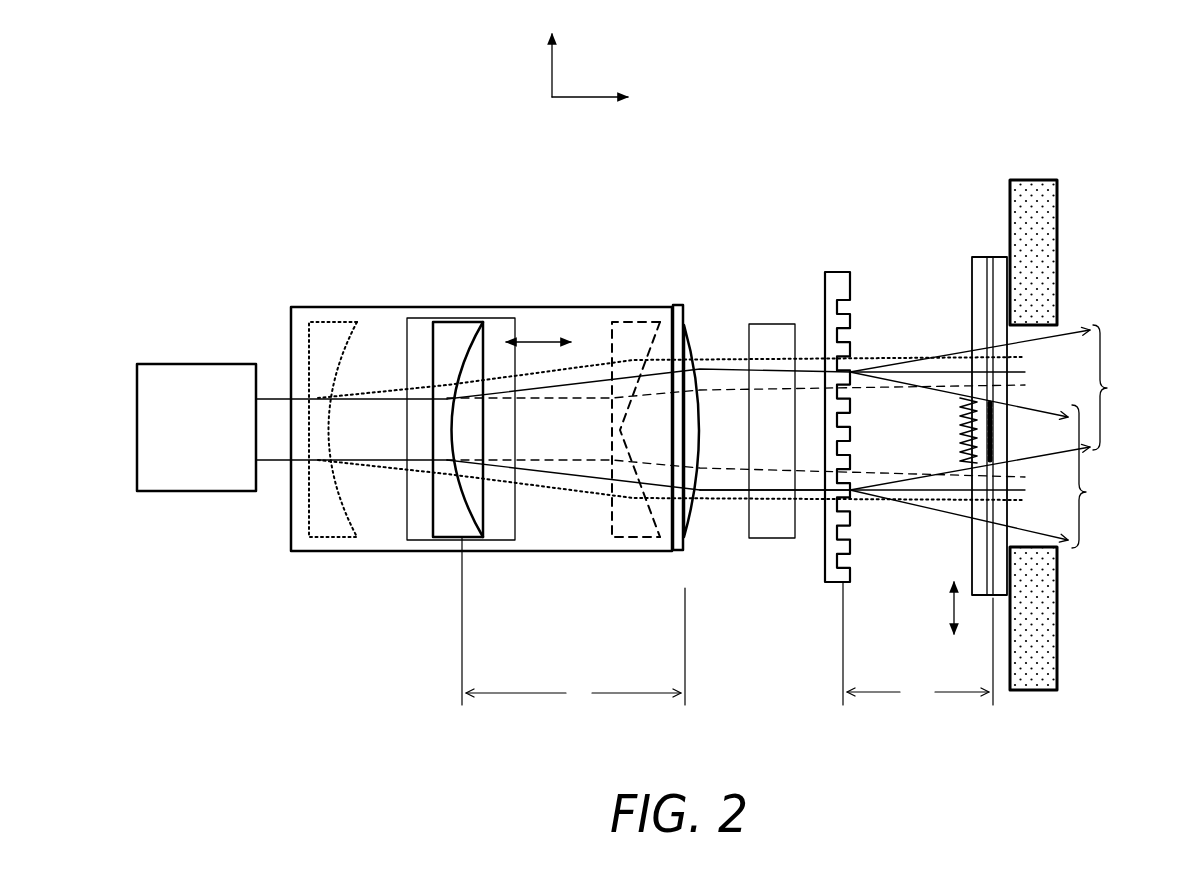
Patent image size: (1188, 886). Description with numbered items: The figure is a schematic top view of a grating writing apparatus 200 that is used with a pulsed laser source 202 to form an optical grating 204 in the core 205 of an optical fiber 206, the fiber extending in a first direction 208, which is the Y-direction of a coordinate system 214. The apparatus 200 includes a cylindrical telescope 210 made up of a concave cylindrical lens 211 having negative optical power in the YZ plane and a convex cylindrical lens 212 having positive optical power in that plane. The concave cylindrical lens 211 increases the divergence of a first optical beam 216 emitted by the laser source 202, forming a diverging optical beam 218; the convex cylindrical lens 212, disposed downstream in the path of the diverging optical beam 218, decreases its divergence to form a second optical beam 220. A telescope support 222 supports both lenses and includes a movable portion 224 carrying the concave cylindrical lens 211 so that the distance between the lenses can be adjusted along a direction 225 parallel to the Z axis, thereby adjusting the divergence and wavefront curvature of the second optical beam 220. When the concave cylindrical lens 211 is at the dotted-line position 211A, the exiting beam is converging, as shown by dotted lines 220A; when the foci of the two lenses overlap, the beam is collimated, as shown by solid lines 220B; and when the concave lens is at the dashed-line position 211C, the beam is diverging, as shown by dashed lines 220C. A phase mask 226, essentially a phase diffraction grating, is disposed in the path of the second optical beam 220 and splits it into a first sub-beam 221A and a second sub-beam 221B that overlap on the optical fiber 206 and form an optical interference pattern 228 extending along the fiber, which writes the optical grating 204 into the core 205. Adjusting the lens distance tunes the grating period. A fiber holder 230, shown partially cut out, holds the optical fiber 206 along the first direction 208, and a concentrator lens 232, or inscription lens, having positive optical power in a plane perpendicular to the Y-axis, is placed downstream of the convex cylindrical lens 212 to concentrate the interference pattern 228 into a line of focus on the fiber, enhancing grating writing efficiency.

The apparatus 200 is at (878, 120).
The pulsed laser source 202 is at (196, 427).
The optical grating 204 is at (1000, 427).
The core 205 is at (995, 553).
The optical fiber 206 is at (972, 316).
The first direction 208 is at (954, 608).
The cylindrical telescope 210 is at (400, 624).
The concave cylindrical lens 211 is at (433, 325).
The position of concave cylindrical lens 211A is at (318, 316).
The position of concave cylindrical lens 211C is at (616, 545).
The convex cylindrical lens 212 is at (688, 333).
The coordinate system 214 is at (533, 72).
The first optical beam 216 is at (273, 407).
The diverging optical beam 218 is at (565, 498).
The second optical beam 220 is at (720, 332).
The converging second optical beam 220A is at (702, 505).
The collimated second optical beam 220B is at (713, 490).
The diverging second optical beam 220C is at (732, 470).
The first sub-beam 221A is at (1015, 387).
The second sub-beam 221B is at (1006, 476).
The telescope support 222 is at (540, 322).
The movable portion 224 is at (503, 318).
The direction 225 is at (558, 338).
The phase mask 226 is at (848, 302).
The optical interference pattern 228 is at (952, 427).
The fiber holder 230 is at (1060, 203).
The concentrator lens 232 is at (777, 540).